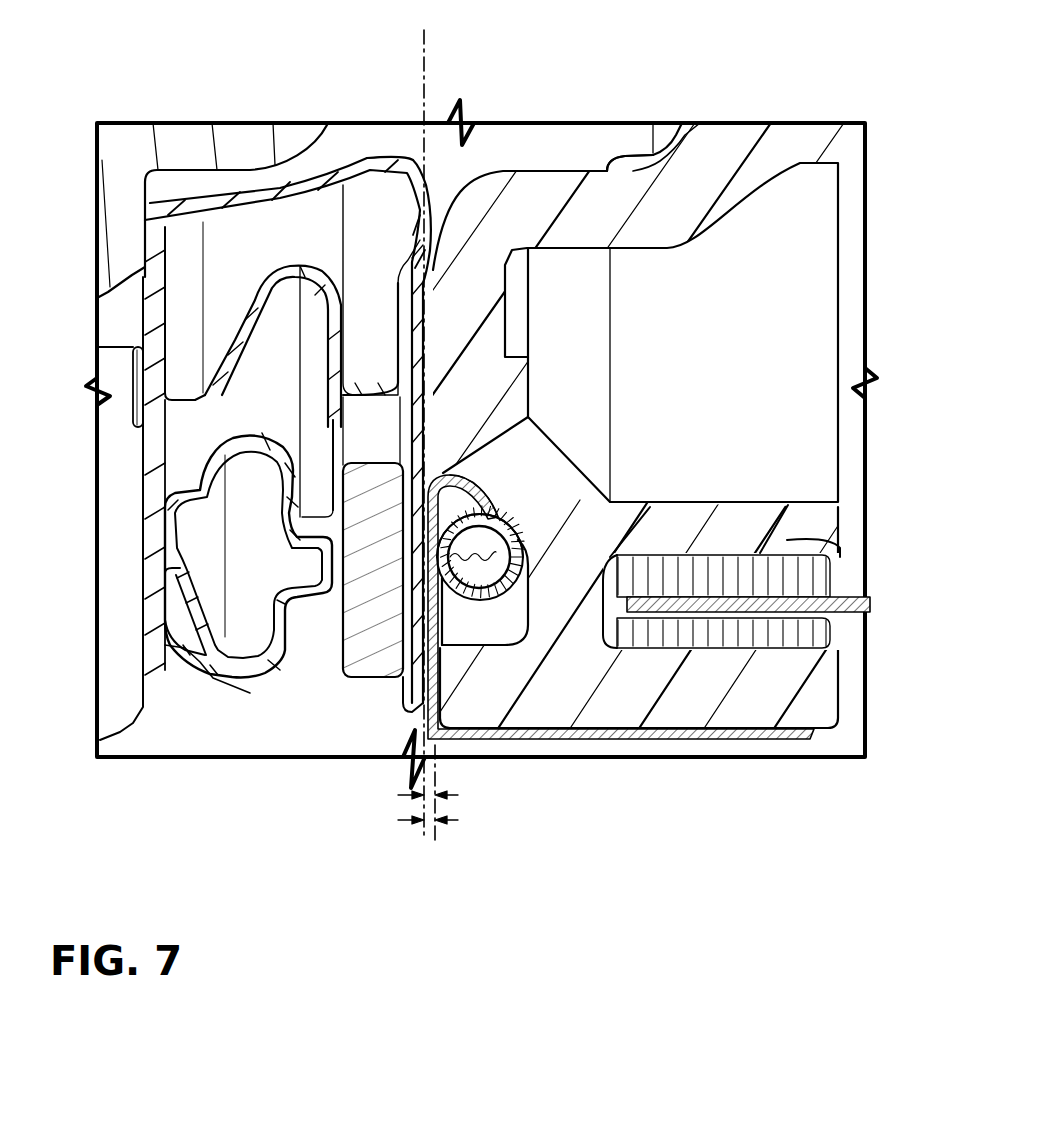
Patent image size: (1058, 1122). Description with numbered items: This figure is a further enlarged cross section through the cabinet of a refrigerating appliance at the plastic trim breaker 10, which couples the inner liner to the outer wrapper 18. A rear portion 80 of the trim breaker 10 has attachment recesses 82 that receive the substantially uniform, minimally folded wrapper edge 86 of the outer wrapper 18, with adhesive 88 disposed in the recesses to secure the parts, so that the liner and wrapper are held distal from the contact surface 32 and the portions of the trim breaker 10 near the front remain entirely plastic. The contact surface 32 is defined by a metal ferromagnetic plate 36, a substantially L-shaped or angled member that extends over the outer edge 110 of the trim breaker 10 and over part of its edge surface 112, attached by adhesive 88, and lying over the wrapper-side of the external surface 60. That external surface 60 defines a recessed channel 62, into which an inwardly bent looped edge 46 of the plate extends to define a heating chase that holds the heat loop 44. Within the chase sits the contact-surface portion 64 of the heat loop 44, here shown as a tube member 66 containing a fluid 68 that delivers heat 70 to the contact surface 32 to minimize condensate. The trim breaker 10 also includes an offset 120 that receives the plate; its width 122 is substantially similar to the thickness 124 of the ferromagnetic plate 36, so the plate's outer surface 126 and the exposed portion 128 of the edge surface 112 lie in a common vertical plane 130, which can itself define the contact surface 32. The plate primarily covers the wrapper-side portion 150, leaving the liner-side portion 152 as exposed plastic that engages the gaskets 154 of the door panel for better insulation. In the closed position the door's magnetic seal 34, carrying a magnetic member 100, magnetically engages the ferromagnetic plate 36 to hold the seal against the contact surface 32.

The trim breaker 10 is at (816, 170).
The outer wrapper 18 is at (847, 596).
The contact surface 32 is at (405, 690).
The magnetic seal 34 is at (412, 442).
The ferromagnetic plate 36 is at (648, 722).
The heat loop 44 is at (443, 513).
The looped edge 46 is at (490, 490).
The external surface 60 is at (420, 357).
The recessed channel 62 is at (530, 632).
The contact-surface portion 64 is at (487, 501).
The tube member 66 is at (513, 582).
The fluid 68 is at (516, 578).
The heat 70 is at (484, 545).
The rear portion 80 is at (816, 735).
The attachment recesses 82 is at (785, 545).
The wrapper edge 86 is at (777, 596).
The adhesive 88 is at (730, 635).
The magnetic member 100 is at (350, 672).
The outer edge 110 is at (423, 705).
The edge surface 112 is at (415, 327).
The offset 120 is at (445, 470).
The width 122 is at (458, 797).
The thickness 124 is at (457, 823).
The outer surface 126 is at (438, 560).
The exposed portion 128 is at (432, 195).
The common vertical plane 130 is at (423, 830).
The wrapper-side portion 150 is at (527, 693).
The liner-side portion 152 is at (577, 171).
The gaskets 154 is at (680, 160).